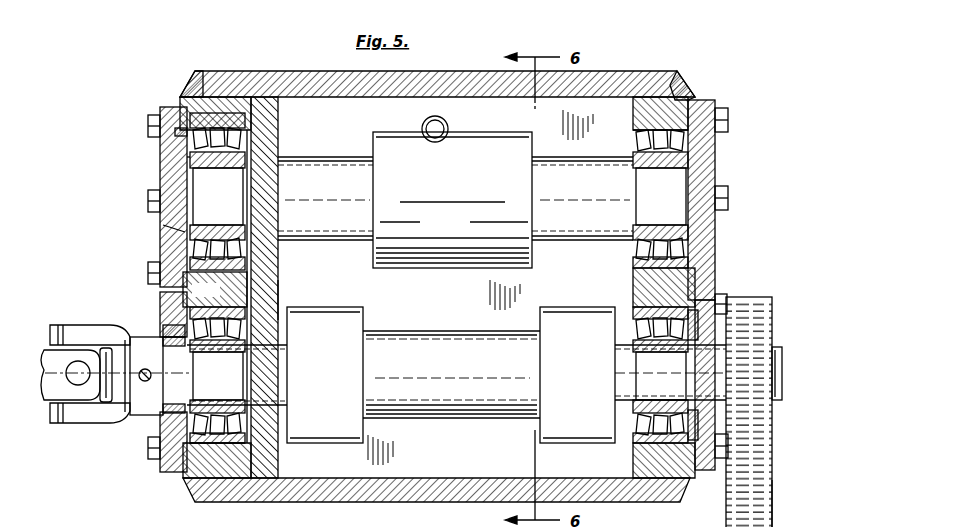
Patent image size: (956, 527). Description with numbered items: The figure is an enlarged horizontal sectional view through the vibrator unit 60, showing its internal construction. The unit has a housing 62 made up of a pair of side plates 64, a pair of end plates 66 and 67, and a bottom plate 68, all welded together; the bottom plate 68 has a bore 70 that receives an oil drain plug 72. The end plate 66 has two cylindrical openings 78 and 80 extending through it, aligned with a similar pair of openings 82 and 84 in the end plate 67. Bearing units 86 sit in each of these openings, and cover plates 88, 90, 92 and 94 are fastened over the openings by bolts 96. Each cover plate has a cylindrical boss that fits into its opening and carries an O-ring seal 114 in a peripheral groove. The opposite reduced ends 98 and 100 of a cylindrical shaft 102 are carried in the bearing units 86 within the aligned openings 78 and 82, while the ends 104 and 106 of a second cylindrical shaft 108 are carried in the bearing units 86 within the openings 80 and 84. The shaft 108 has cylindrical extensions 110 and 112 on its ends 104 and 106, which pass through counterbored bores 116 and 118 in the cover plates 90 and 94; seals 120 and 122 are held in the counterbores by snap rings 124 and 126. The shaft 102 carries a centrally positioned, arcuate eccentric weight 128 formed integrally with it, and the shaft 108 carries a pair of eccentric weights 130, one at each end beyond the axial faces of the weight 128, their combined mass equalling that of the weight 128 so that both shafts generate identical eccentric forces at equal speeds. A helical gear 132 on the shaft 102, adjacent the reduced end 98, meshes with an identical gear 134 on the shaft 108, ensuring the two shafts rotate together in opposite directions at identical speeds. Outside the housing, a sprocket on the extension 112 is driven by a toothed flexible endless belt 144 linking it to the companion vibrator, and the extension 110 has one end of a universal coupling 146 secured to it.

The vibrator unit 60 is at (652, 60).
The housing 62 is at (270, 70).
The side plates 64 is at (334, 80).
The end plate 66 is at (185, 100).
The end plate 67 is at (692, 93).
The bottom plate 68 is at (484, 368).
The bore 70 is at (446, 126).
The oil drain plug 72 is at (432, 124).
The cylindrical opening 78 is at (163, 150).
The cylindrical opening 80 is at (215, 289).
The opening 82 is at (632, 136).
The opening 84 is at (632, 304).
The bearing units 86 is at (632, 345).
The cover plate 88 is at (172, 188).
The cover plate 90 is at (176, 494).
The cover plate 92 is at (708, 160).
The cover plate 94 is at (695, 478).
The bolts 96 is at (151, 114).
The reduced end 98 is at (168, 236).
The reduced end 100 is at (640, 186).
The cylindrical shaft 102 is at (556, 236).
The end 104 is at (210, 432).
The end 106 is at (633, 390).
The second cylindrical shaft 108 is at (486, 412).
The cylindrical extension 110 is at (152, 412).
The cylindrical extension 112 is at (776, 340).
The O-ring seal 114 is at (437, 286).
The counterbored cylindrical bore 116 is at (174, 351).
The counterbored cylindrical bore 118 is at (661, 376).
The seal 120 is at (172, 400).
The seal 122 is at (694, 375).
The snap ring 124 is at (160, 330).
The snap ring 126 is at (720, 396).
The eccentric weight 128 is at (380, 184).
The eccentric weights 130 is at (355, 360).
The helical gear 132 is at (279, 124).
The gear 134 is at (280, 305).
The toothed flexible endless belt 144 is at (773, 504).
The universal coupling 146 is at (48, 416).